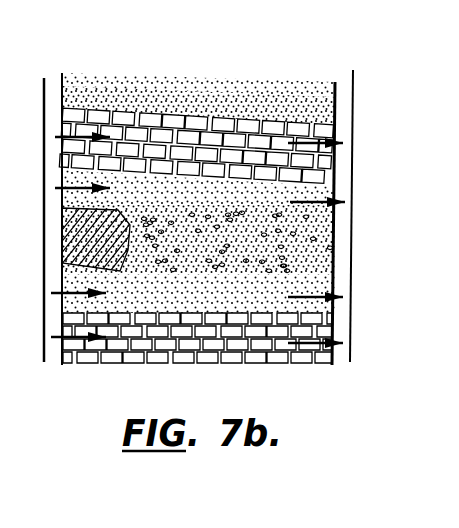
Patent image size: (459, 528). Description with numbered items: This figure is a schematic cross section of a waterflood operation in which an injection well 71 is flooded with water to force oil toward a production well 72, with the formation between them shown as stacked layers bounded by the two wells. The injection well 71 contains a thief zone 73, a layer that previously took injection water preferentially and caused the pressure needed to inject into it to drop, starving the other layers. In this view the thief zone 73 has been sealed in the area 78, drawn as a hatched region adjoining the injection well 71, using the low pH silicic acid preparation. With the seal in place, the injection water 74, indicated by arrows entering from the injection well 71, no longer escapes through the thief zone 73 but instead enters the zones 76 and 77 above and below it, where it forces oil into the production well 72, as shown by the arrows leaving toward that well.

The injection well 71 is at (62, 83).
The production well 72 is at (353, 98).
The thief zone 73 is at (152, 234).
The injection water 74 is at (62, 137).
The zone 76 is at (312, 217).
The zone 77 is at (330, 158).
The sealed area 78 is at (73, 249).